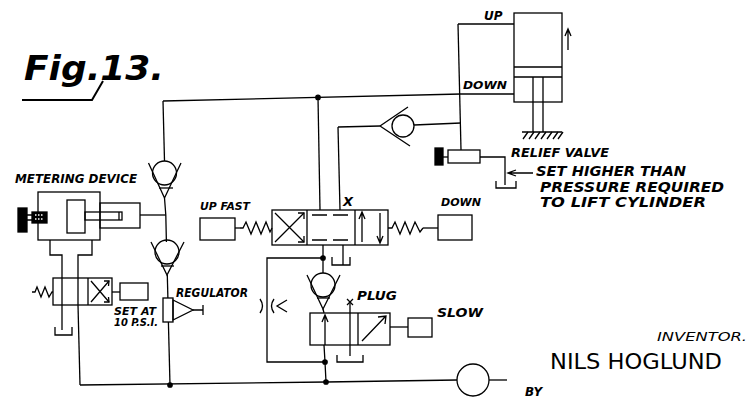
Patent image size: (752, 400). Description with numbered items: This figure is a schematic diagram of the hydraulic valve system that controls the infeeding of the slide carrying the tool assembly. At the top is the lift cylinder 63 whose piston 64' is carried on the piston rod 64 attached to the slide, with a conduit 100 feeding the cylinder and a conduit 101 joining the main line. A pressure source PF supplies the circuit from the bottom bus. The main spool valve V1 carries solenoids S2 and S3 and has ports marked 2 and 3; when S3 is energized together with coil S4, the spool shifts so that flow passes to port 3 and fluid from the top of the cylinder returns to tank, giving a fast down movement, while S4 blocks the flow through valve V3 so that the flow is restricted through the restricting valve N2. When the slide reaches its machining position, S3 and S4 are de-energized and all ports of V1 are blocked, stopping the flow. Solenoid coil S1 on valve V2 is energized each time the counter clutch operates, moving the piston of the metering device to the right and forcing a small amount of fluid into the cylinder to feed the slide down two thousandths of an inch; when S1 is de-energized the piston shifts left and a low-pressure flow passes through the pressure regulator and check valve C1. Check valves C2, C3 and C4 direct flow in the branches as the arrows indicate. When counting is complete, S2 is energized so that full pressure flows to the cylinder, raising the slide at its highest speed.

The lift cylinder 63 is at (562, 26).
The piston 64' is at (557, 67).
The piston rod 64 is at (559, 108).
The conduit to cylinder 100 is at (458, 70).
The conduit 101 is at (377, 91).
The valve port 2 is at (349, 255).
The port 3 of valve V1 3 is at (306, 201).
The check valve C1 is at (174, 257).
The check valve C2 is at (170, 172).
The check valve C3 is at (318, 286).
The check valve C4 is at (408, 125).
The solenoid coil S1 is at (130, 291).
The solenoid S2 is at (220, 229).
The coil S3 is at (447, 227).
The coil S4 is at (411, 327).
The valve V1 is at (350, 271).
The valve V2 is at (72, 331).
The valve V3 is at (350, 367).
The restricting valve N2 is at (287, 310).
The pressure fluid source PF is at (482, 380).